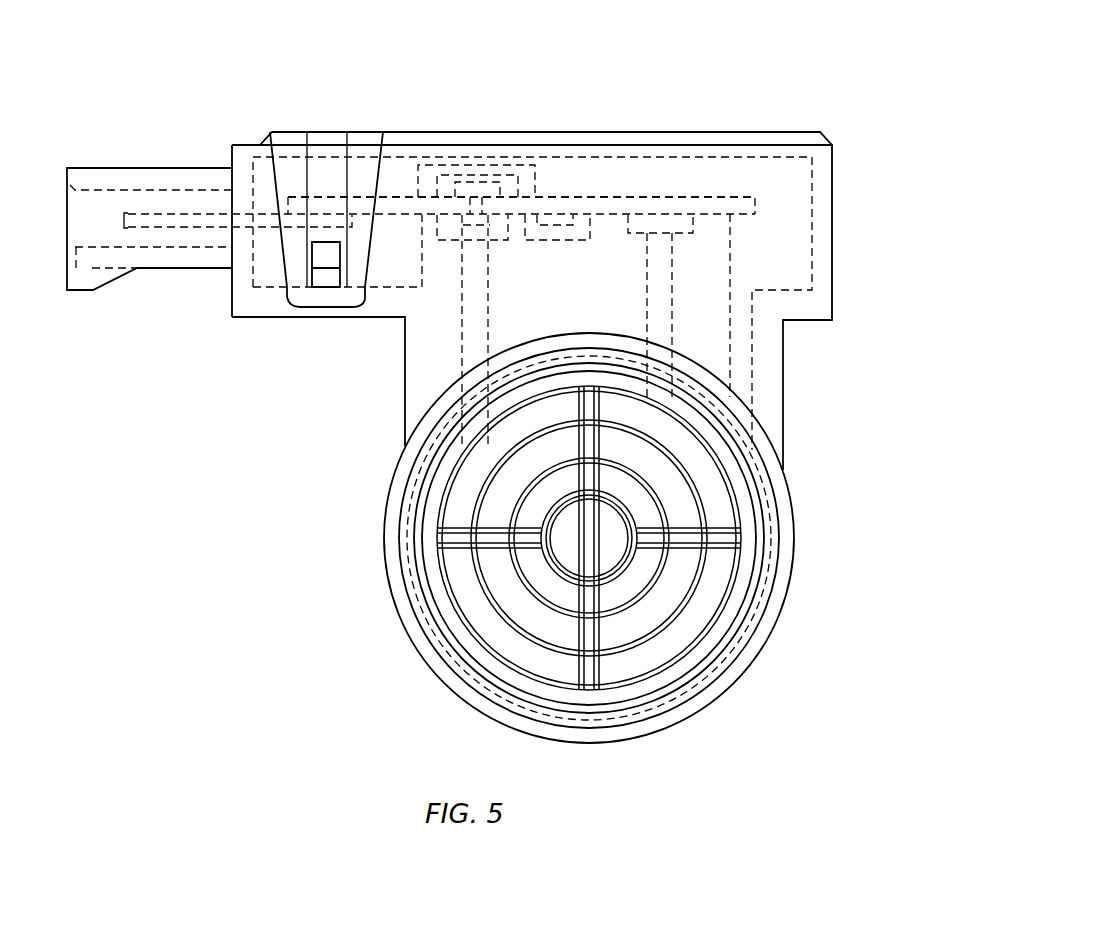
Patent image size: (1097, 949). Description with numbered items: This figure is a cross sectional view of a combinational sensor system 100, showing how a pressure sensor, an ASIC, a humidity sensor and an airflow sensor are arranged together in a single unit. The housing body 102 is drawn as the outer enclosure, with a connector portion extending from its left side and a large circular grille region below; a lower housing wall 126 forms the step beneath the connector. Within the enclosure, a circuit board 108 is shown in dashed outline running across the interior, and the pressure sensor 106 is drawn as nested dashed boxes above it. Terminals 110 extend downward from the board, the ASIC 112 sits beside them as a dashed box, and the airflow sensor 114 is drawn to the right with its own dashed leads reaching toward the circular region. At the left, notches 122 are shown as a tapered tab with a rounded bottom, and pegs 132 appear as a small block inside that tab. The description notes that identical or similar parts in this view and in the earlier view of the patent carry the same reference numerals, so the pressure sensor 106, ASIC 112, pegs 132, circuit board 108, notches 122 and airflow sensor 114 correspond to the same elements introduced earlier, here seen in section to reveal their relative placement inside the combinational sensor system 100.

The combinational sensor system 100 is at (828, 74).
The housing 102 is at (565, 132).
The pressure sensor 106 is at (478, 185).
The circuit board 108 is at (598, 200).
The first terminal 110 is at (455, 222).
The ASIC 112 is at (552, 222).
The airflow sensor 114 is at (657, 217).
The notches 122 is at (282, 263).
The housing lower wall 126 is at (273, 317).
The pegs 132 is at (325, 254).